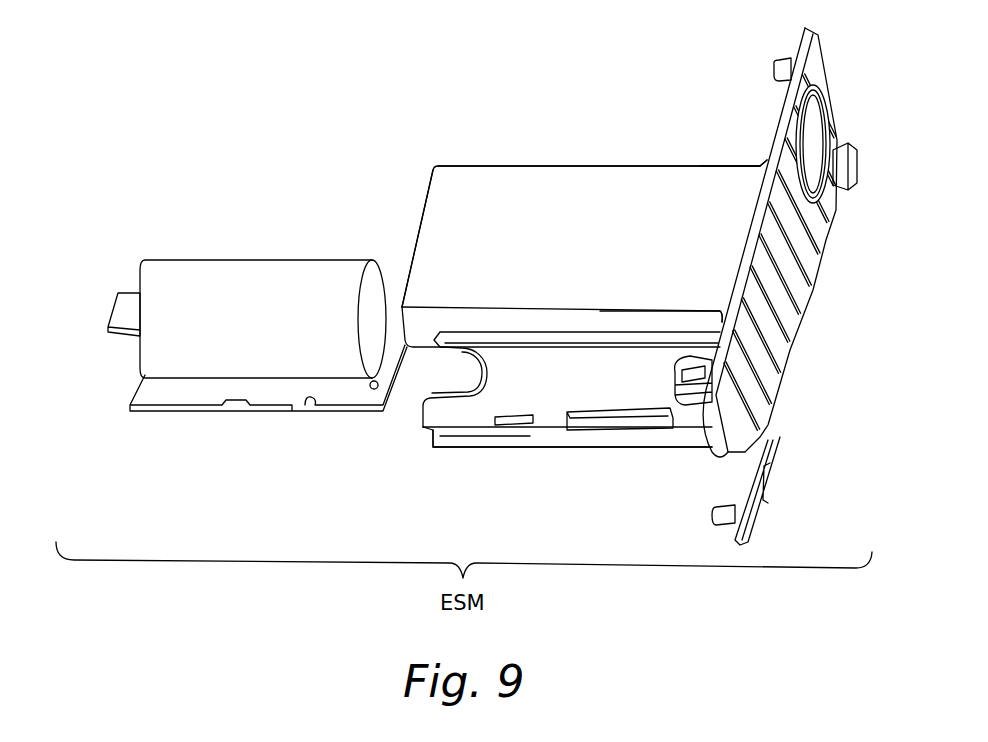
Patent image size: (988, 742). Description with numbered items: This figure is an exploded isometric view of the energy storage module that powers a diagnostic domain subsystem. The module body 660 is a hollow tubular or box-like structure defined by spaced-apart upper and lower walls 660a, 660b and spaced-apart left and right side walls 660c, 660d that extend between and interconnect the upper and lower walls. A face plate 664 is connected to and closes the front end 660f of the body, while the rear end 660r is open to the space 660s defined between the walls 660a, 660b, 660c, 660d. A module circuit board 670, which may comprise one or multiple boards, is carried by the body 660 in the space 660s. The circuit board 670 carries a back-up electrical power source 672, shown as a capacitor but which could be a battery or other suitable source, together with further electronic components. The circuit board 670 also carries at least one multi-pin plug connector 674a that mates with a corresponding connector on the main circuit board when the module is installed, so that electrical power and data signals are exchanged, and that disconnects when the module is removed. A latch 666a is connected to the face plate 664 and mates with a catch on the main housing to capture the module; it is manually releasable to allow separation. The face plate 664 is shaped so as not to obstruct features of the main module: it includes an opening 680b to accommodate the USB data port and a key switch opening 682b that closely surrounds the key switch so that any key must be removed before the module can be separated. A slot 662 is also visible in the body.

The ESM body 660 is at (587, 190).
The upper wall 660a is at (524, 165).
The lower wall 660b is at (535, 395).
The left side wall 660c is at (692, 251).
The right side wall 660d is at (422, 434).
The front end 660f is at (737, 148).
The rear end 660r is at (402, 215).
The space 660s is at (460, 373).
The slot 662 is at (575, 363).
The face plate 664 is at (818, 64).
The latch 666a is at (675, 380).
The ESM circuit board 670 is at (147, 393).
The back-up electrical power source 672 is at (258, 278).
The multi-pin plug connector 674a is at (123, 305).
The opening 680b is at (720, 472).
The key switch opening 682b is at (820, 122).